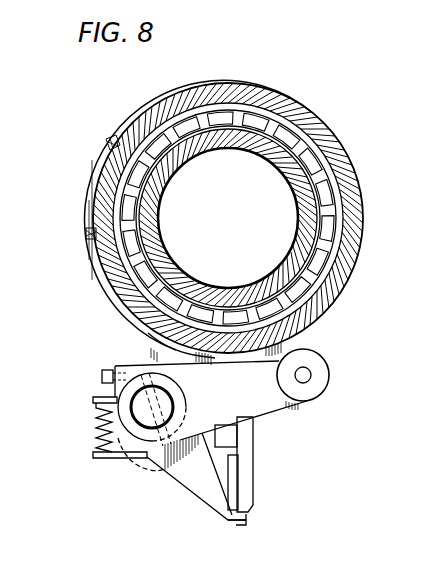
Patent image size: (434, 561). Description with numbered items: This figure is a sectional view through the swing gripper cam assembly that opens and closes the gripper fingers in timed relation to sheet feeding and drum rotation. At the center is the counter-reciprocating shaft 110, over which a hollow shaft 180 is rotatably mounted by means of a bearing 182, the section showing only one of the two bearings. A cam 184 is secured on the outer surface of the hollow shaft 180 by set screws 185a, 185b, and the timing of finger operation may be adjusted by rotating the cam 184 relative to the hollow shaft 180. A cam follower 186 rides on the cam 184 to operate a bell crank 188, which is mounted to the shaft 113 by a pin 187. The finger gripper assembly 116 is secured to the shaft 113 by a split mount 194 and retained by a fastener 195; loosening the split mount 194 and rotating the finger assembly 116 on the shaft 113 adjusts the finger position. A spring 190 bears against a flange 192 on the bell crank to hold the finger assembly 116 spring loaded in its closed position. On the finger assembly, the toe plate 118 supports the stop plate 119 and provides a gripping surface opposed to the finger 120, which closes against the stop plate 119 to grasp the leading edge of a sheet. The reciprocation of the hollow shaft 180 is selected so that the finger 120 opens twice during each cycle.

The shaft 110 is at (265, 201).
The shaft 113 is at (171, 406).
The finger gripper assembly 116 is at (209, 506).
The toe plate 118 is at (228, 433).
The stop plate 119 is at (255, 498).
The finger 120 is at (241, 527).
The hollow shaft 180 is at (272, 94).
The bearing 182 is at (318, 169).
The cam 184 is at (90, 173).
The set screw 185a is at (89, 245).
The set screw 185b is at (116, 133).
The cam follower 186 is at (326, 386).
The pin 187 is at (265, 387).
The bell crank 188 is at (150, 470).
The spring 190 is at (97, 438).
The flange 192 is at (93, 400).
The split mount 194 is at (125, 366).
The fastener 195 is at (102, 374).